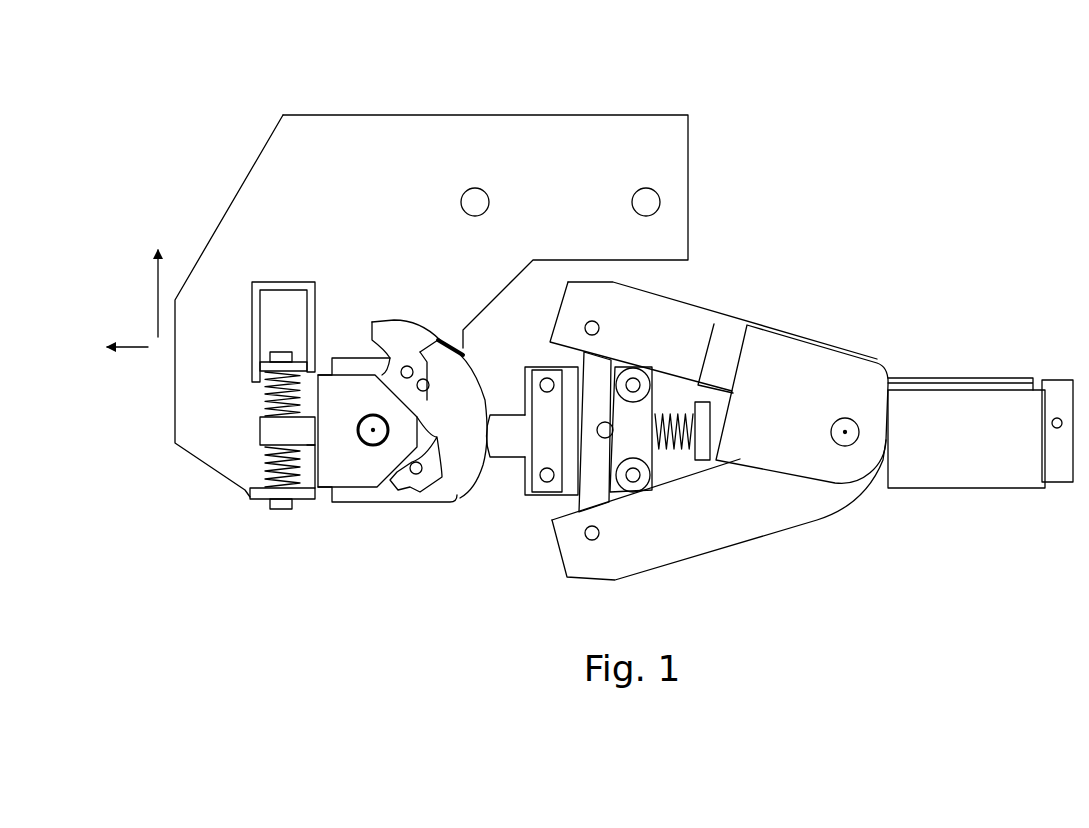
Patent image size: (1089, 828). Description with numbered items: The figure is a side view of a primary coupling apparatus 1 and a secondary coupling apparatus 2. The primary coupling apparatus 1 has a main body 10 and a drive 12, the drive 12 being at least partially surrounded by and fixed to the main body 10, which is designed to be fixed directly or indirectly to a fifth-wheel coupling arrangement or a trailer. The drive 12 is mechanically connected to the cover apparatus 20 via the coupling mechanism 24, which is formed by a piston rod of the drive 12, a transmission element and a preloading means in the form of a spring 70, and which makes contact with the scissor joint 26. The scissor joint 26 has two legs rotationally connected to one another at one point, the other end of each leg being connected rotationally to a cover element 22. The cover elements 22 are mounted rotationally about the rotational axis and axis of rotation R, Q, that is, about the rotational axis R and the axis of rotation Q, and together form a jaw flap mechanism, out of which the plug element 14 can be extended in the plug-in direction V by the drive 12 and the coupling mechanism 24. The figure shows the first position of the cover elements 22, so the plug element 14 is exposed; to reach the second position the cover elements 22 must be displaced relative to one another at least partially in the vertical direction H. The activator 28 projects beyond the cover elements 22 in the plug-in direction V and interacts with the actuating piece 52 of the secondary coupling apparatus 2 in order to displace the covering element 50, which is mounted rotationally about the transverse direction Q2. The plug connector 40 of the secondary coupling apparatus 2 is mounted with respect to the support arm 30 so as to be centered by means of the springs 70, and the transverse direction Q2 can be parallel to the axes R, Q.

The primary coupling apparatus 1 is at (944, 310).
The secondary coupling apparatus 2 is at (278, 519).
The main body 10 is at (925, 475).
The drive 12 is at (1062, 475).
The plug element 14 is at (572, 480).
The cover apparatus 20 is at (744, 310).
The cover element 22 is at (687, 318).
The coupling mechanism 24 is at (723, 457).
The scissor joint 26 is at (593, 378).
The activator 28 is at (493, 450).
The support arm 30 is at (303, 137).
The plug connector 40 is at (437, 487).
The covering element 50 is at (388, 332).
The actuating piece 52 is at (457, 393).
The spring 70 is at (265, 385).
The transverse direction Q2 is at (373, 432).
The rotation axis R, Q is at (845, 432).
The vertical direction H is at (160, 270).
The plug-in direction V is at (125, 345).